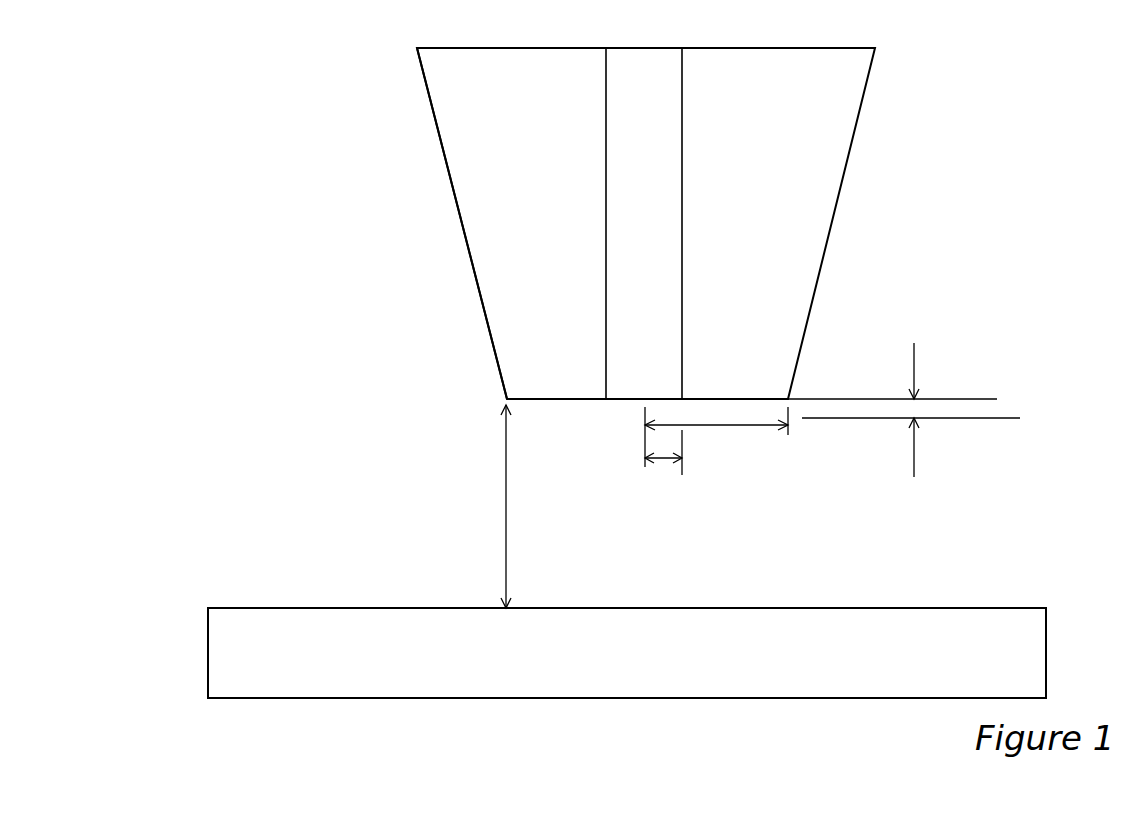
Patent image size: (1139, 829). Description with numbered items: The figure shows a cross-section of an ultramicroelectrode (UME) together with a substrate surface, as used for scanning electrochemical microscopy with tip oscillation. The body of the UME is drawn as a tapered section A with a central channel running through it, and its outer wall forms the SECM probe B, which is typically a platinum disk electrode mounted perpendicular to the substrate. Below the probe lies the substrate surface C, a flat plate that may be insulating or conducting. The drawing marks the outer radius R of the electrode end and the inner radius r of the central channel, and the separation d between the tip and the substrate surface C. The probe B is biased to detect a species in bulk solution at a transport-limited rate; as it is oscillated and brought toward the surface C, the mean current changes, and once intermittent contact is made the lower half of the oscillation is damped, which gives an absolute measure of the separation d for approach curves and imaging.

The nozzle body with central channel A is at (687, 118).
The SECM probe (UME tip) B is at (468, 243).
The substrate surface C is at (922, 600).
The outer radius R is at (716, 437).
The inner radius r is at (663, 452).
The stand-off distance d is at (497, 506).